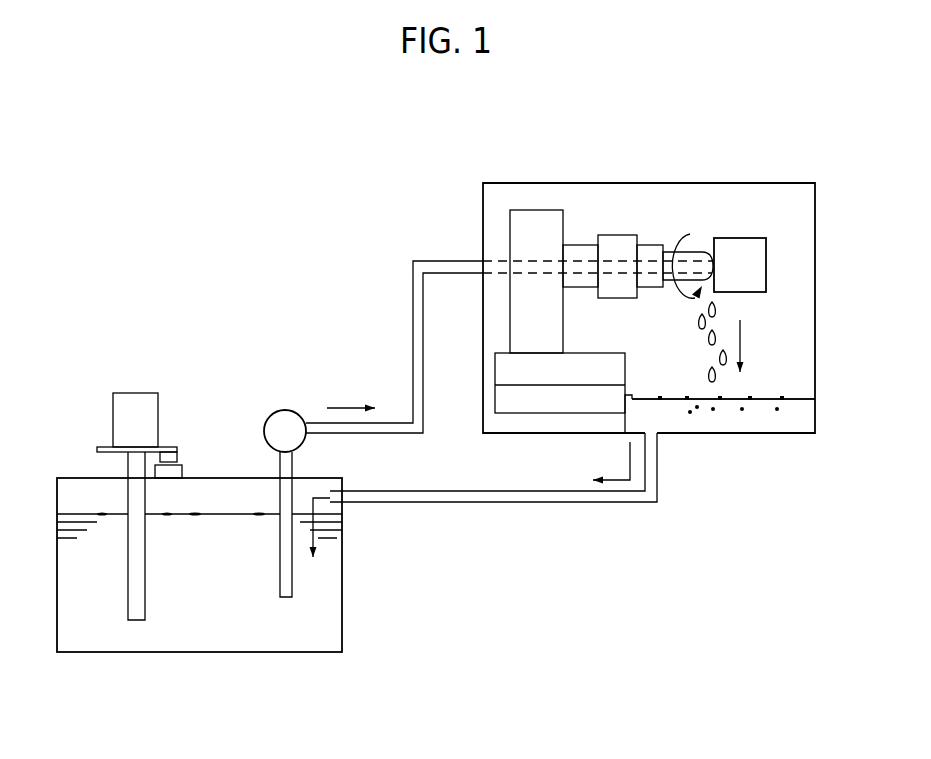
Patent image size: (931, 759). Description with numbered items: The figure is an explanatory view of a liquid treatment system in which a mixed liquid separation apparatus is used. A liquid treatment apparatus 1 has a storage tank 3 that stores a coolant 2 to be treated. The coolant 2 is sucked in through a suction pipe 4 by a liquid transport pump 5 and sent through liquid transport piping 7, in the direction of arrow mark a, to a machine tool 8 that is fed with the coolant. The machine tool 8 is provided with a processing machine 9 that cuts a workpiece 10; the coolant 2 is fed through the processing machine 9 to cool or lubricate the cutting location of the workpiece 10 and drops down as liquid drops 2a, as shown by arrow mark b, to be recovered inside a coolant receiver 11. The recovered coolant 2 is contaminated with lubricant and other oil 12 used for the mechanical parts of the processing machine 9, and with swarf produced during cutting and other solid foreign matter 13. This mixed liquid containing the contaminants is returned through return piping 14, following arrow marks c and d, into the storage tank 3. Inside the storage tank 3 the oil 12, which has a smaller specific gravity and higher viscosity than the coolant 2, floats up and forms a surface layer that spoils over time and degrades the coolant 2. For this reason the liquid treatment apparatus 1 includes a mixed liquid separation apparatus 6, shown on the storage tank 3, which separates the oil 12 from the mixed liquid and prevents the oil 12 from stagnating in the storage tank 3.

The liquid treatment apparatus 1 is at (215, 350).
The coolant 2 is at (225, 630).
The liquid drops 2a is at (711, 377).
The storage tank 3 is at (342, 568).
The suction pipe 4 is at (288, 575).
The liquid transport pump 5 is at (273, 408).
The mixed liquid separation apparatus 6 is at (125, 387).
The liquid transport piping 7 is at (415, 340).
The machine tool 8 is at (645, 200).
The processing machine 9 is at (582, 218).
The workpiece 10 is at (748, 250).
The coolant receiver 11 is at (788, 393).
The oil 12 is at (257, 516).
The solid foreign matter 13 is at (742, 411).
The return piping 14 is at (602, 495).
The arrow mark a is at (353, 403).
The arrow mark b is at (743, 342).
The arrow mark c is at (628, 461).
The arrow mark d is at (323, 498).